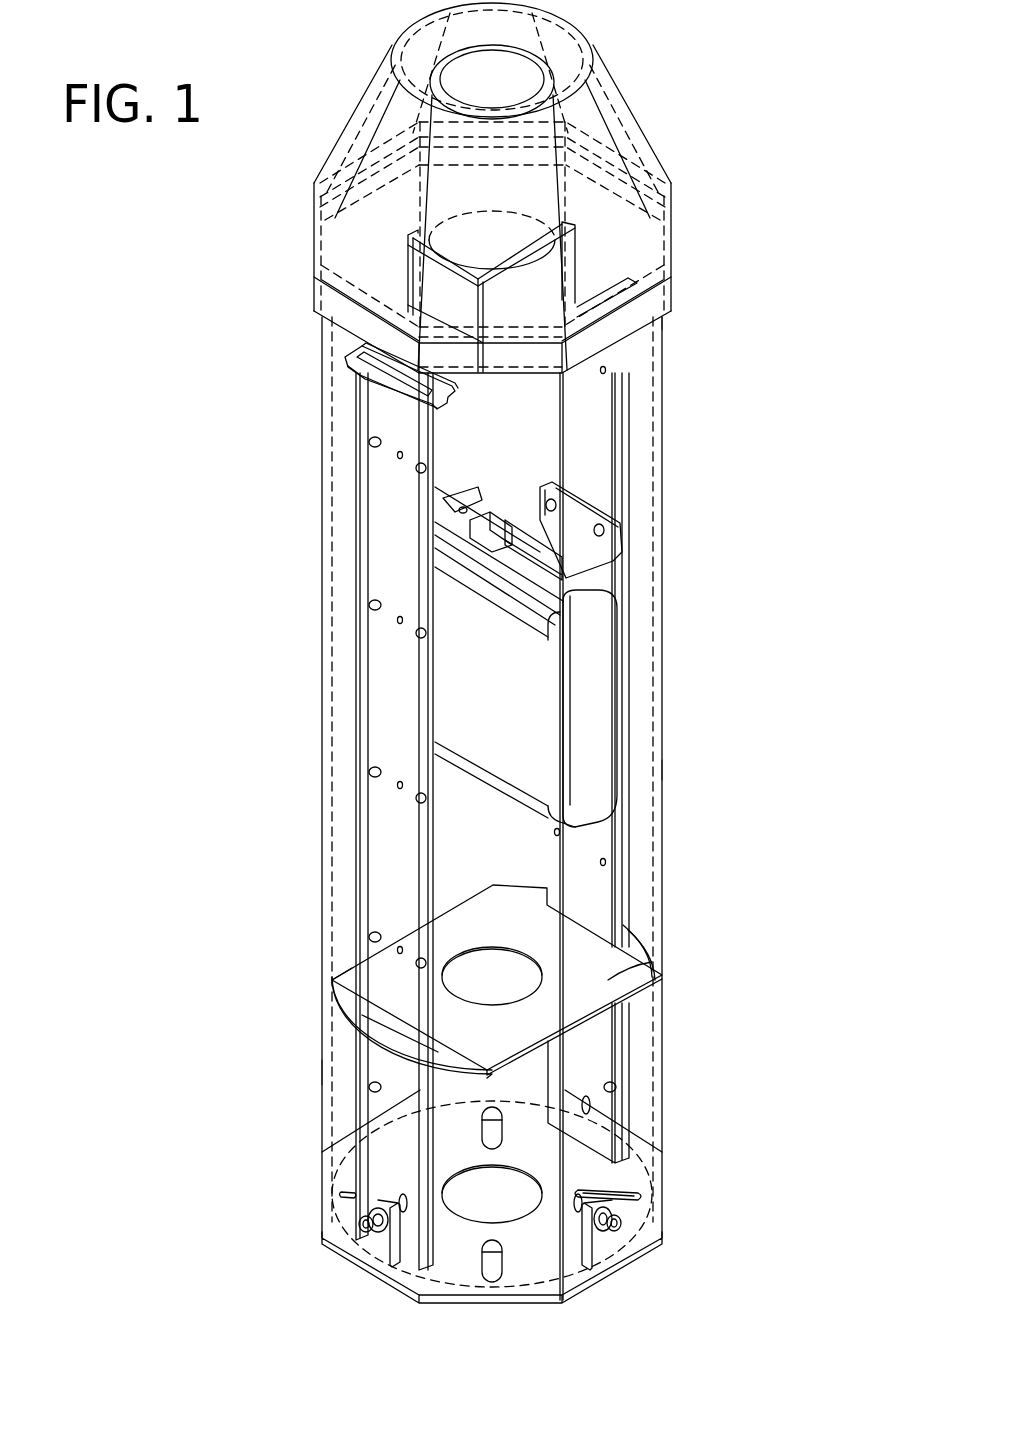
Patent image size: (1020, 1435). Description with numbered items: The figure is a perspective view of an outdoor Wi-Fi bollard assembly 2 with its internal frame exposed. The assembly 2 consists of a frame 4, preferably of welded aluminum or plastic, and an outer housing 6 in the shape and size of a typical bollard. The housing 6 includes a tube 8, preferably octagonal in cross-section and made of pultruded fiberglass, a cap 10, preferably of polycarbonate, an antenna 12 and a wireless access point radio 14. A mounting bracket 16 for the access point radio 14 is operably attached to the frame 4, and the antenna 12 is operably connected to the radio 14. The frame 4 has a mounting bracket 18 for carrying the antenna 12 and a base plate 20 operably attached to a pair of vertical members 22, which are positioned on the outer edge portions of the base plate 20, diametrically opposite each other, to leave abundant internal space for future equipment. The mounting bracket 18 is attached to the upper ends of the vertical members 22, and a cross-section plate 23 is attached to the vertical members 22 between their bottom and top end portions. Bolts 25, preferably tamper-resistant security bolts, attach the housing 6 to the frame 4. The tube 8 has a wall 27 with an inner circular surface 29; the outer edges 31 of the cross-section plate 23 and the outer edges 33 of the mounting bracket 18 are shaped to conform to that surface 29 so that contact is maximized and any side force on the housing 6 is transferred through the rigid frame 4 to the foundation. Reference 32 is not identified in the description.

The outdoor Wi-Fi bollard assembly 2 is at (272, 576).
The frame 4 is at (395, 707).
The outer housing 6 is at (655, 445).
The tube 8 is at (663, 770).
The cap 10 is at (630, 103).
The antenna 12 is at (512, 221).
The wireless access point radio 14 is at (597, 697).
The mounting bracket 16 is at (612, 568).
The mounting bracket 18 is at (375, 366).
The base plate 20 is at (640, 1208).
The vertical members 22 is at (600, 492).
The cross-section plate 23 is at (613, 980).
The bolts 25 is at (370, 1220).
The wall 27 is at (322, 1072).
The inner circular surface 29 is at (552, 1287).
The outer edges 31 is at (632, 932).
The mounting plate 32 is at (385, 1242).
The outer edges 33 is at (607, 250).